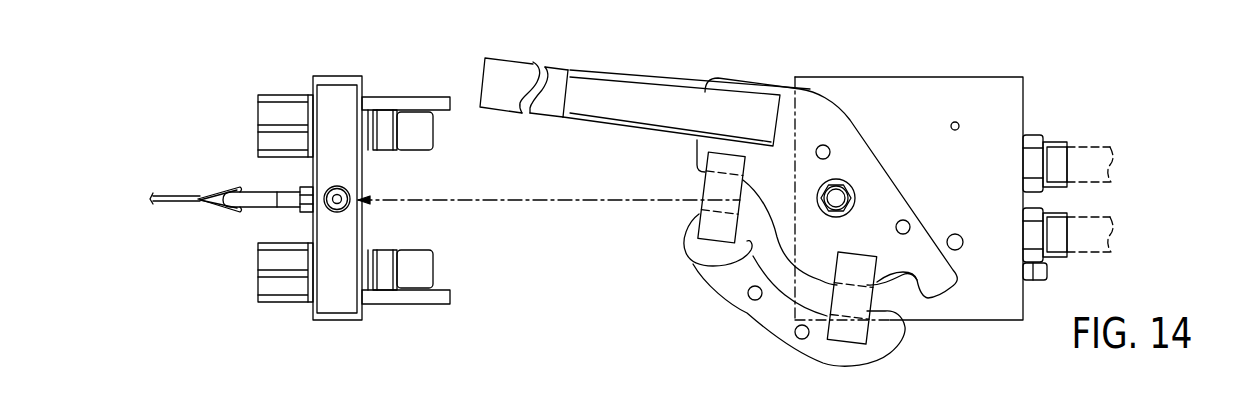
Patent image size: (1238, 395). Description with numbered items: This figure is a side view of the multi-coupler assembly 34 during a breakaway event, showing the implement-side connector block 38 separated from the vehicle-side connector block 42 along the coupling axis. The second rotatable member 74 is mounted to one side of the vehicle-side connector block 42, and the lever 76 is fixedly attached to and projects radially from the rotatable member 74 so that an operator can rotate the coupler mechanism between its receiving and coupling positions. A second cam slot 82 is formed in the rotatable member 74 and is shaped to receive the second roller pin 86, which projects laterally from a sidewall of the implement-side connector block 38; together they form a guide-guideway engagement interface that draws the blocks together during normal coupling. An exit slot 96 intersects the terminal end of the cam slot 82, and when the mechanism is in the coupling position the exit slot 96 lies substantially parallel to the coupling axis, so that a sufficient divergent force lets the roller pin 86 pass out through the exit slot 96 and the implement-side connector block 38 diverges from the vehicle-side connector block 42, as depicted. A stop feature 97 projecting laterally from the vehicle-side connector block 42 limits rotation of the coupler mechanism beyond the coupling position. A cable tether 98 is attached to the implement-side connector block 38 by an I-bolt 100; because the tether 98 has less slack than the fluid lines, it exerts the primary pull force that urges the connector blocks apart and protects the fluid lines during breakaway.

The multi-coupler assembly 34 is at (1068, 85).
The implement-side connector block 38 is at (312, 318).
The vehicle-side connector block 42 is at (950, 74).
The second rotatable member 74 is at (886, 207).
The lever 76 is at (601, 88).
The second cam slot 82 is at (699, 265).
The second roller pin 86 is at (349, 191).
The exit slot 96 is at (700, 212).
The stop feature 97 is at (957, 238).
The cable tether 98 is at (180, 199).
The I-bolt 100 is at (258, 204).